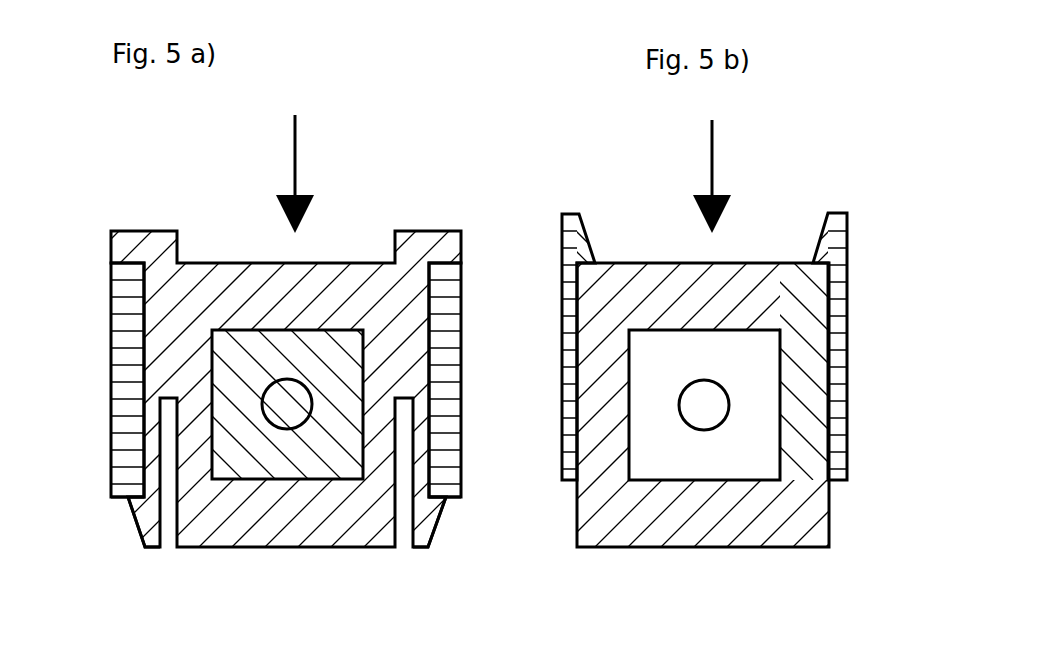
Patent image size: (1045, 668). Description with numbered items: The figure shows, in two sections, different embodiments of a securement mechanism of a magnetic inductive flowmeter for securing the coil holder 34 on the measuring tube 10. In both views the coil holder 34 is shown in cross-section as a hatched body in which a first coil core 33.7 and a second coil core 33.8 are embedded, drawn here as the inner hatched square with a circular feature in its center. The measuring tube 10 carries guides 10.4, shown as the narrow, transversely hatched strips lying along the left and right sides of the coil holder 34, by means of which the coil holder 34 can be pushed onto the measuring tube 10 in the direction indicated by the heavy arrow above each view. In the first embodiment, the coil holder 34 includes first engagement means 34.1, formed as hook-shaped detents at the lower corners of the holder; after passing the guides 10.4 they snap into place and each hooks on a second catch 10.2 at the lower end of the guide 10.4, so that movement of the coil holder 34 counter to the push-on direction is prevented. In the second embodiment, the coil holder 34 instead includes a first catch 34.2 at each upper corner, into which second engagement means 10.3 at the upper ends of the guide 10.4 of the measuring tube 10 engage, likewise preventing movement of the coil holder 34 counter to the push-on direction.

In FIG. 5a, the measuring tube 10 is at (283, 344).
In FIG. 5b, the measuring tube 10 is at (713, 334).
In FIG. 5a, the second catch 10.2 is at (128, 497).
In FIG. 5b, the second engagement means 10.3 is at (708, 313).
In FIG. 5a, the guide 10.4 is at (128, 328).
In FIG. 5b, the guide 10.4 is at (713, 334).
In FIG. 5a, the first coil core 33.7 is at (283, 310).
In FIG. 5b, the first coil core 33.7 is at (536, 467).
In FIG. 5a, the second coil core 33.8 is at (240, 348).
In FIG. 5b, the second coil core 33.8 is at (745, 448).
In FIG. 5a, the coil holder 34 is at (397, 547).
In FIG. 5b, the coil holder 34 is at (613, 512).
In FIG. 5a, the first engagement means 34.1 is at (145, 512).
In FIG. 5b, the first catch 34.2 is at (704, 319).